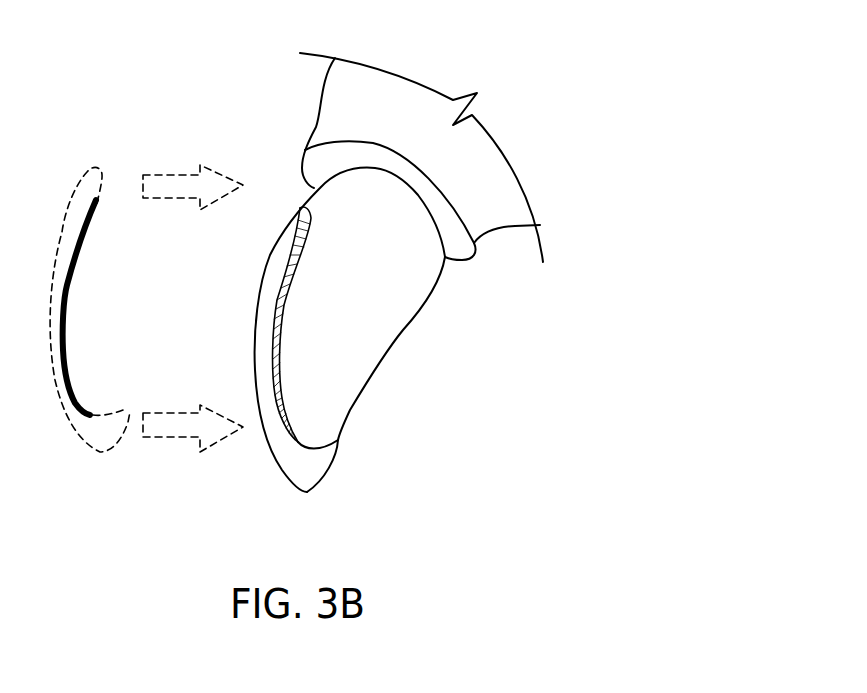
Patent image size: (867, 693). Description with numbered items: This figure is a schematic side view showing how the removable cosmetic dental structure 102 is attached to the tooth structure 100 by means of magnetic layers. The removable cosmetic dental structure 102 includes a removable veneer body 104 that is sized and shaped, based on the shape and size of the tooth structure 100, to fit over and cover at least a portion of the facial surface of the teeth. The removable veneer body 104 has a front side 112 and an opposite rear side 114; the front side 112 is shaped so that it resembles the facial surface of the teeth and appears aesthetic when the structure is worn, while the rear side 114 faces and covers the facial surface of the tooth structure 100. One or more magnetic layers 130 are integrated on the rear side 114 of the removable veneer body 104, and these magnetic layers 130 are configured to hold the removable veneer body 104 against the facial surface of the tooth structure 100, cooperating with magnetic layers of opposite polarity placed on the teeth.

The tooth structure 100 is at (437, 320).
The removable cosmetic dental structure 102 is at (307, 492).
The removable veneer body 104 is at (262, 298).
The front side 112 is at (257, 360).
The rear side 114 is at (284, 318).
The magnetic layers 130 is at (310, 231).